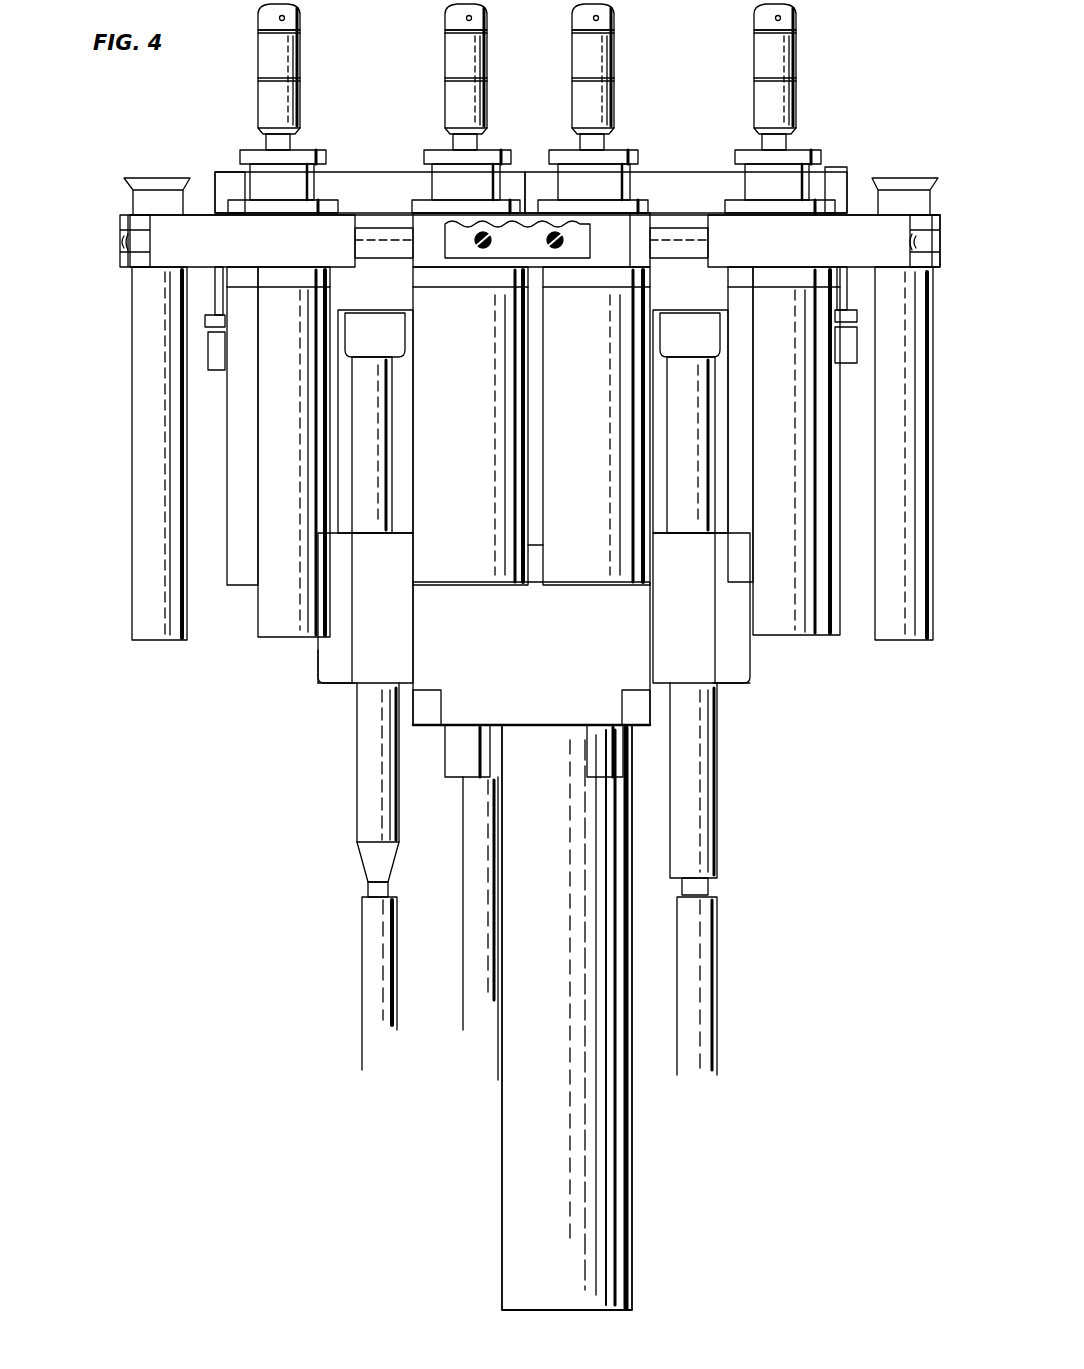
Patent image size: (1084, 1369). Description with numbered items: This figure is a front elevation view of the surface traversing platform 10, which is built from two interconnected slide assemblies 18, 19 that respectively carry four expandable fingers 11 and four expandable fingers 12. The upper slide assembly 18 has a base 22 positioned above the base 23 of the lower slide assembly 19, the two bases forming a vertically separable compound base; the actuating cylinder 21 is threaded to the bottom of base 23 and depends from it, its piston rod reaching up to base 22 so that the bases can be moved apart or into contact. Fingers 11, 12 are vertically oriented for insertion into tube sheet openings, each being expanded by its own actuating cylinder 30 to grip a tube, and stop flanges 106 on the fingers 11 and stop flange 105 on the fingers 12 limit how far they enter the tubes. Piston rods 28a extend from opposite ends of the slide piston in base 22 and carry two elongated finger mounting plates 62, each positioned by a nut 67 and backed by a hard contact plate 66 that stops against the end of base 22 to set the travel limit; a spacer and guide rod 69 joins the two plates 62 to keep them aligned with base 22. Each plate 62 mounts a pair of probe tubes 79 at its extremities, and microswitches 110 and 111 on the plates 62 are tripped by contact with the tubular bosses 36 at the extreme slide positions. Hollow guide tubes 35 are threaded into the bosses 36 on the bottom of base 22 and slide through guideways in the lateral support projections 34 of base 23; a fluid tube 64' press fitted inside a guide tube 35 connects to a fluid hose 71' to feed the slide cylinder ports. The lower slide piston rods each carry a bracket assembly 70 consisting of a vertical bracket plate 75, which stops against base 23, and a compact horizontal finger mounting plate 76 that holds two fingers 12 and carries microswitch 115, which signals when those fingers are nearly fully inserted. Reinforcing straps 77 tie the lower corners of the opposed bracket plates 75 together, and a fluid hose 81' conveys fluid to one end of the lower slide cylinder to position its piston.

The platform 10 is at (190, 108).
The expandable fingers 11 is at (300, 60).
The expandable fingers 12 is at (578, 45).
The slide assembly 18 is at (700, 140).
The slide assembly 19 is at (318, 660).
The actuating cylinder 21 is at (577, 994).
The base 22 is at (392, 178).
The base 23 is at (380, 627).
The piston rods 28a is at (124, 238).
The actuating cylinder 30 is at (232, 453).
The support projections 34 is at (337, 683).
The guide tubes 35 is at (358, 786).
The tubular bosses 36 is at (388, 347).
The finger mounting plates 62 is at (128, 215).
The fluid tube 64' is at (724, 886).
The hard contact plate 66 is at (222, 172).
The nut 67 is at (138, 252).
The spacer and guide rod 69 is at (382, 232).
The bracket assemblies 70 is at (553, 636).
The fluid hose 71' is at (715, 986).
The bracket plate 75 is at (535, 708).
The finger mounting plate 76 is at (645, 226).
The reinforcing straps 77 is at (430, 696).
The probe tubes 79 is at (148, 358).
The fluid hose 81' is at (462, 928).
The stop flange 105 is at (555, 150).
The stop flanges 106 is at (320, 150).
The microswitch 110 is at (843, 358).
The microswitch 111 is at (222, 360).
The microswitch 115 is at (535, 252).